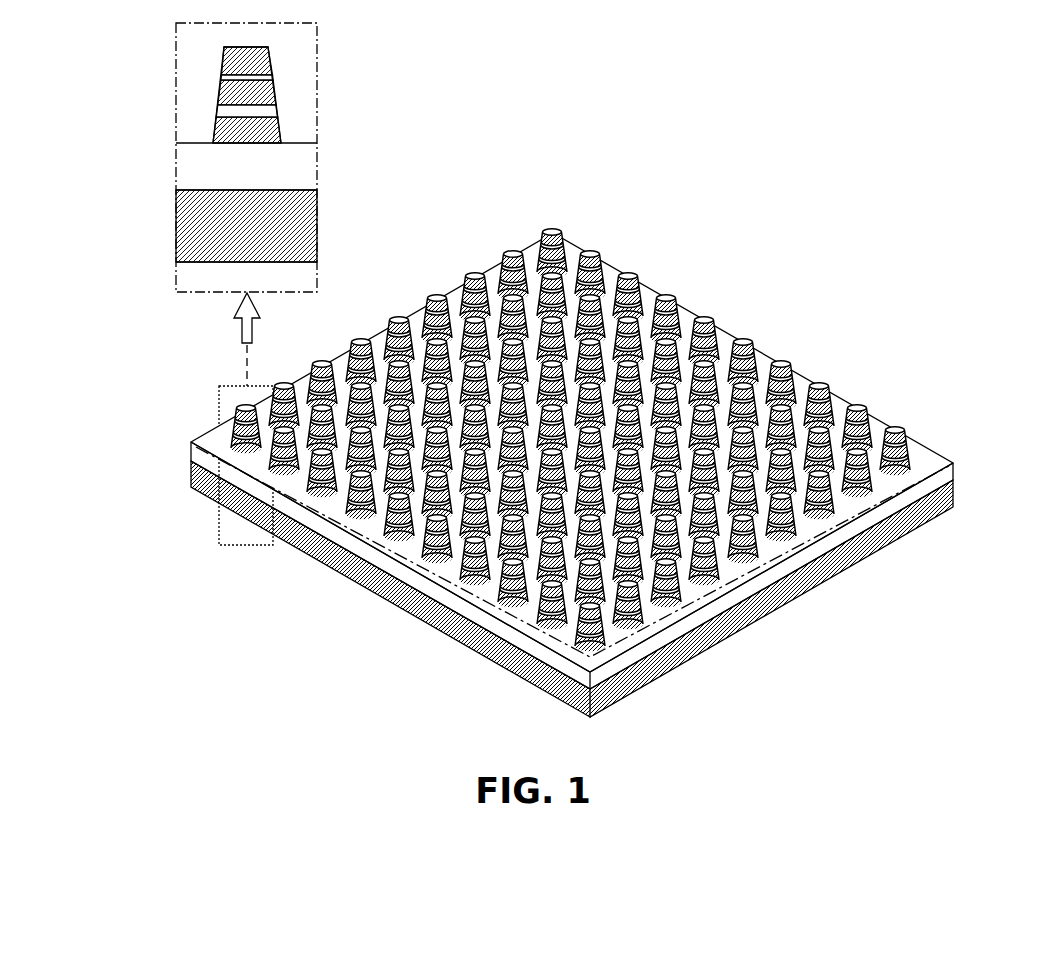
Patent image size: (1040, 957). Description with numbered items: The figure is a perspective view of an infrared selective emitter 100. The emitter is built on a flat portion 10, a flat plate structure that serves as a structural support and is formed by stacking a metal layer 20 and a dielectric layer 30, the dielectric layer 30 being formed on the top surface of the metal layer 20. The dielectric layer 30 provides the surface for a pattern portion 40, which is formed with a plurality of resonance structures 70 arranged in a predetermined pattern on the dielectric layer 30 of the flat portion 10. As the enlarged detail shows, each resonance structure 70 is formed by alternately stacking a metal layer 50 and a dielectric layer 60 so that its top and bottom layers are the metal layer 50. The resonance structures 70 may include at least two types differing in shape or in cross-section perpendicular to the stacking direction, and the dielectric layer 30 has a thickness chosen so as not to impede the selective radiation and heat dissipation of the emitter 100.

The infrared selective emitter 100 is at (495, 431).
The flat portion 10 is at (495, 431).
The metal layer 20 is at (192, 228).
The dielectric layer 30 is at (186, 168).
The pattern portion 40 is at (407, 227).
The metal layer 50 is at (220, 63).
The dielectric layer 60 is at (220, 78).
The resonance structure 70 is at (165, 83).